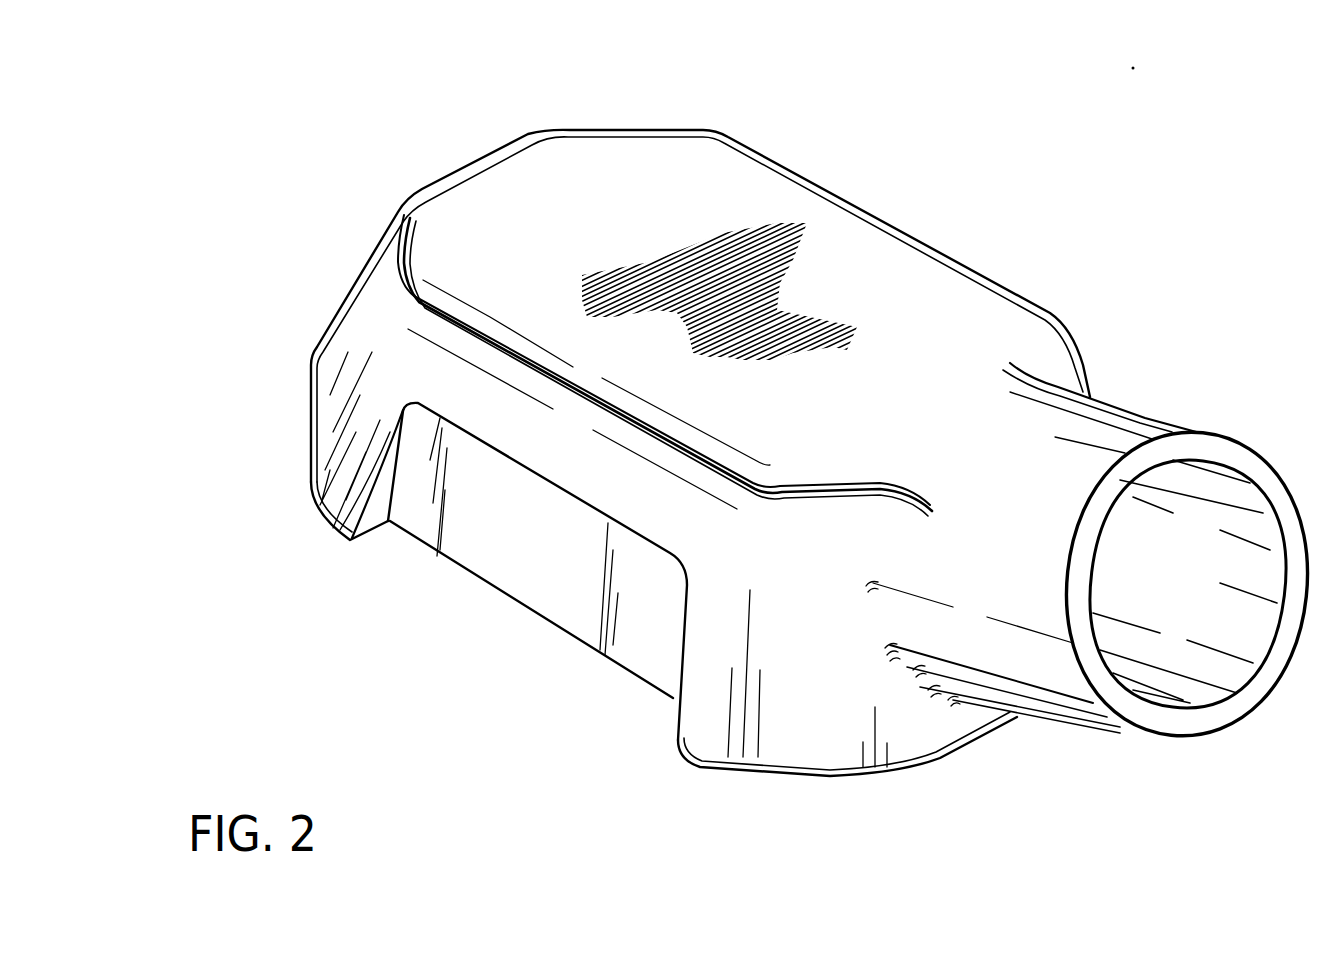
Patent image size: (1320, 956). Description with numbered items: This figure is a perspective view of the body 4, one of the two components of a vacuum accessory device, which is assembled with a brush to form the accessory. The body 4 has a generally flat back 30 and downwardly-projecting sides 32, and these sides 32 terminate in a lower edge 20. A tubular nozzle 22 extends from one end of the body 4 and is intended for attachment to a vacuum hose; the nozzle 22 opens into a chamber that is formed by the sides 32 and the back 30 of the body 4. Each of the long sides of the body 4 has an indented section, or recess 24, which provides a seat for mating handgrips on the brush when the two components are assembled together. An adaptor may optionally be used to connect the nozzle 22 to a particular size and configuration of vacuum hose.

The body 4 is at (296, 440).
The lower edge 20 is at (757, 770).
The tubular nozzle 22 is at (1183, 718).
The indented section (recess) 24 is at (505, 537).
The back 30 is at (650, 183).
The sides 32 is at (365, 318).